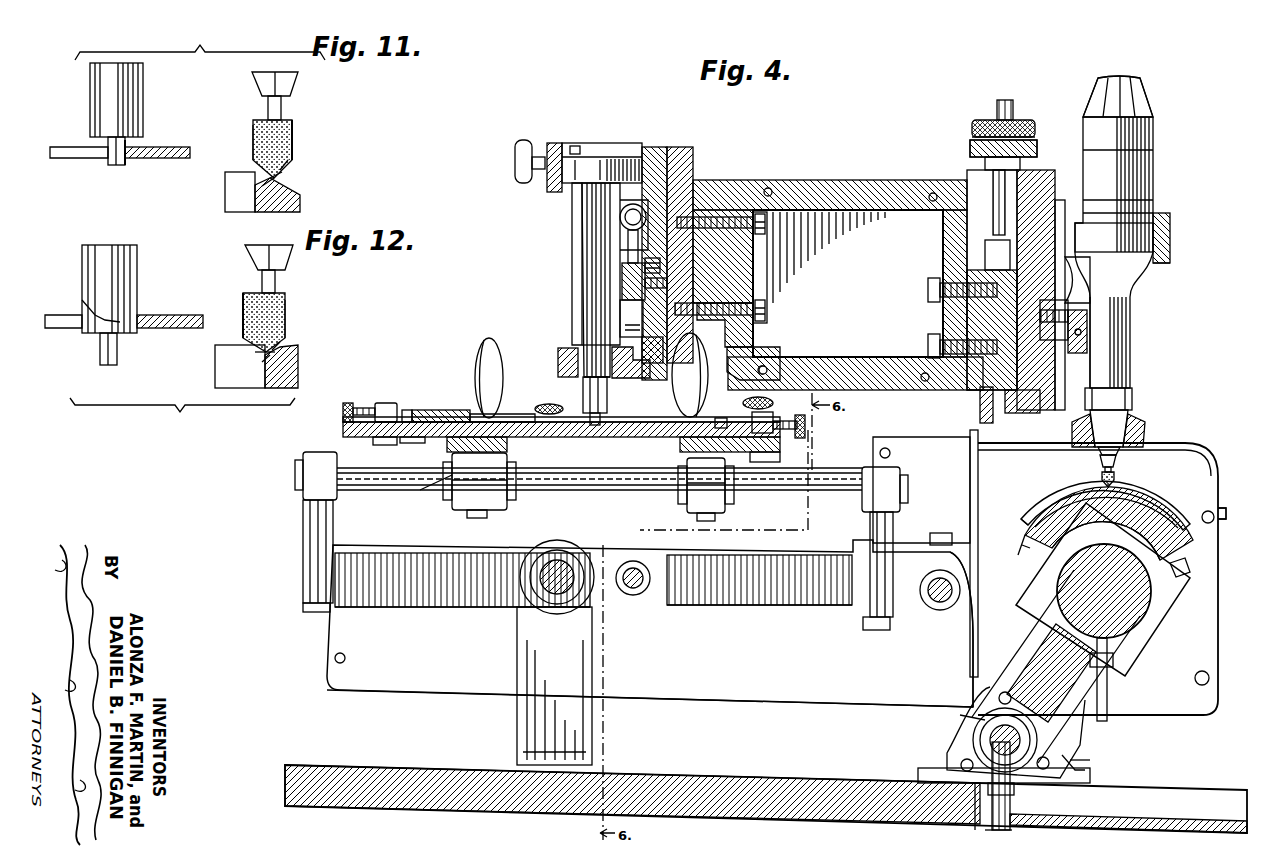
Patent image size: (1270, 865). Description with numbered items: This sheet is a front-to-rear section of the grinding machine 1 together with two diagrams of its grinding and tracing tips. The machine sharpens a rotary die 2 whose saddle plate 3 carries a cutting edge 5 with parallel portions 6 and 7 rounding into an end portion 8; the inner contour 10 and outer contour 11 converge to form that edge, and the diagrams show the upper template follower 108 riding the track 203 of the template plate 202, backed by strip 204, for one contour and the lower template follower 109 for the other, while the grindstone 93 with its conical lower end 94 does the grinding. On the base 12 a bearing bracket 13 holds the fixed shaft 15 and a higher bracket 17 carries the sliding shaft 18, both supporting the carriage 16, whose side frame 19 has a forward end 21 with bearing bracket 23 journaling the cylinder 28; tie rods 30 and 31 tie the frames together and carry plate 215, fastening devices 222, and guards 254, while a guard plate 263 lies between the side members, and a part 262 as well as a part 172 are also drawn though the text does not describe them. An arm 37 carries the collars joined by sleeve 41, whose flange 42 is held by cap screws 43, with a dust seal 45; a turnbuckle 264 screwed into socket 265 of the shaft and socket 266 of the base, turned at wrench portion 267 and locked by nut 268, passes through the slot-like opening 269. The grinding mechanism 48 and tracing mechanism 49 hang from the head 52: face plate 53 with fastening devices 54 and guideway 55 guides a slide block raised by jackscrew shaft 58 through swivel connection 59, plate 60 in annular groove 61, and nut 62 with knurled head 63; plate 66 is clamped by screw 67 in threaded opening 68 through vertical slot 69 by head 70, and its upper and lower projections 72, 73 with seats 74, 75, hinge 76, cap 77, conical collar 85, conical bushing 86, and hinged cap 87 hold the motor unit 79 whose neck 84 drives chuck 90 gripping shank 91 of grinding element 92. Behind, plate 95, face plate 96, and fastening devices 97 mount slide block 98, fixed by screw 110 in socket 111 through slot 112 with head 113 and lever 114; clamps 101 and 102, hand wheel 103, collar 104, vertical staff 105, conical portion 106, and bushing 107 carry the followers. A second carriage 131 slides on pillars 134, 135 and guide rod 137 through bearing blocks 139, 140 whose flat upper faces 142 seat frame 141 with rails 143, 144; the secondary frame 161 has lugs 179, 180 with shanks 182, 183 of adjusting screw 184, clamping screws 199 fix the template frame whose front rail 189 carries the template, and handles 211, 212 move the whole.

In FIG. 4, the grinding machine 1 is at (320, 452).
In FIG. 4, the rotary die 2 is at (1170, 550).
In FIG. 11, the saddle plate 3 is at (300, 200).
In FIG. 12, the saddle plate 3 is at (298, 375).
In FIG. 4, the saddle plate 3 is at (1165, 567).
In FIG. 11, the cutting edge 5 is at (235, 172).
In FIG. 12, the cutting edge 5 is at (225, 345).
In FIG. 4, the cutting edge 5 is at (1165, 503).
In FIG. 4, the parallel cutting edge portion 6 is at (1022, 545).
In FIG. 11, the parallel cutting edge portion 7 is at (278, 182).
In FIG. 12, the parallel cutting edge portion 7 is at (272, 356).
In FIG. 4, the parallel cutting edge portion 7 is at (1218, 522).
In FIG. 4, the end cutting edge portion 8 is at (1150, 503).
In FIG. 11, the inner contour 10 is at (253, 135).
In FIG. 12, the inner contour 10 is at (285, 320).
In FIG. 4, the inner contour 10 is at (1045, 500).
In FIG. 11, the outer contour 11 is at (290, 160).
In FIG. 12, the outer contour 11 is at (282, 344).
In FIG. 4, the outer contour 11 is at (1020, 538).
In FIG. 4, the base 12 is at (290, 765).
In FIG. 4, the bearing bracket 13 is at (1075, 768).
In FIG. 4, the fixed shaft 15 is at (1020, 730).
In FIG. 4, the carriage 16 is at (303, 540).
In FIG. 4, the bracket 17 is at (517, 640).
In FIG. 4, the shaft 18 is at (560, 565).
In FIG. 4, the side frame 19 is at (757, 612).
In FIG. 4, the forward end 21 is at (973, 645).
In FIG. 4, the bearing bracket 23 is at (1150, 615).
In FIG. 4, the cylinder 28 is at (1140, 605).
In FIG. 4, the tie rod 30 is at (938, 605).
In FIG. 4, the tie rod 31 is at (635, 590).
In FIG. 4, the arm 37 is at (1107, 690).
In FIG. 4, the sleeve 41 is at (985, 700).
In FIG. 4, the flange 42 is at (1045, 738).
In FIG. 4, the cap screw 43 is at (945, 772).
In FIG. 4, the dust seal 45 is at (975, 730).
In FIG. 4, the grinding mechanism 48 is at (1130, 330).
In FIG. 4, the tracing mechanism 49 is at (572, 293).
In FIG. 4, the head 52 is at (870, 180).
In FIG. 4, the face plate 53 is at (980, 400).
In FIG. 4, the fastening device 54 is at (930, 330).
In FIG. 4, the vertical guideway 55 is at (993, 205).
In FIG. 4, the jackscrew shaft 58 is at (1010, 100).
In FIG. 4, the swivel connection 59 is at (990, 240).
In FIG. 4, the plate 60 is at (1040, 170).
In FIG. 4, the annular groove 61 is at (985, 162).
In FIG. 4, the nut 62 is at (1030, 120).
In FIG. 4, the knurled head 63 is at (975, 122).
In FIG. 4, the plate 66 is at (1118, 204).
In FIG. 4, the screw 67 is at (1085, 280).
In FIG. 4, the internally threaded opening 68 is at (1050, 340).
In FIG. 4, the vertical slot 69 is at (1114, 237).
In FIG. 4, the head 70 is at (1085, 312).
In FIG. 4, the upper lateral projection 72 is at (1070, 215).
In FIG. 4, the lower lateral projection 73 is at (1100, 452).
In FIG. 4, the semicircular seat 74 is at (1118, 189).
In FIG. 4, the semicircular seat 75 is at (1108, 399).
In FIG. 4, the hinge 76 is at (1170, 220).
In FIG. 4, the cap 77 is at (1170, 245).
In FIG. 4, the motor unit 79 is at (1150, 110).
In FIG. 4, the depending neck portion 84 is at (1130, 310).
In FIG. 4, the conical collar 85 is at (1128, 415).
In FIG. 4, the conical bushing 86 is at (1125, 428).
In FIG. 4, the hinged cap 87 is at (1145, 435).
In FIG. 11, the chuck 90 is at (296, 80).
In FIG. 12, the chuck 90 is at (255, 245).
In FIG. 4, the chuck 90 is at (1116, 460).
In FIG. 11, the shank 91 is at (281, 108).
In FIG. 12, the shank 91 is at (262, 278).
In FIG. 4, the shank 91 is at (1105, 469).
In FIG. 11, the grinding element 92 is at (253, 122).
In FIG. 12, the grinding element 92 is at (285, 295).
In FIG. 11, the grindstone 93 is at (294, 125).
In FIG. 12, the grindstone 93 is at (243, 295).
In FIG. 4, the grindstone 93 is at (1114, 475).
In FIG. 11, the conical lower end 94 is at (282, 172).
In FIG. 12, the conical lower end 94 is at (255, 352).
In FIG. 4, the conical lower end 94 is at (1100, 484).
In FIG. 4, the plate 95 is at (730, 180).
In FIG. 4, the face plate 96 is at (685, 147).
In FIG. 4, the fastening device 97 is at (745, 217).
In FIG. 4, the slide block 98 is at (655, 147).
In FIG. 4, the upper clamp 101 is at (555, 143).
In FIG. 4, the lower clamp 102 is at (558, 358).
In FIG. 4, the hand wheel 103 is at (515, 162).
In FIG. 4, the collar 104 is at (600, 146).
In FIG. 11, the vertical staff 105 is at (130, 60).
In FIG. 12, the vertical staff 105 is at (122, 245).
In FIG. 4, the vertical staff 105 is at (582, 228).
In FIG. 4, the conical portion 106 is at (590, 355).
In FIG. 4, the bushing 107 is at (588, 372).
In FIG. 11, the upper template follower 108 is at (158, 92).
In FIG. 12, the upper template follower 108 is at (137, 280).
In FIG. 4, the upper template follower 108 is at (620, 393).
In FIG. 11, the lower template follower 109 is at (110, 160).
In FIG. 12, the lower template follower 109 is at (117, 352).
In FIG. 4, the lower template follower 109 is at (600, 420).
In FIG. 4, the screw 110 is at (622, 280).
In FIG. 4, the internally threaded socket 111 is at (645, 290).
In FIG. 4, the slot 112 is at (628, 247).
In FIG. 4, the head 113 is at (645, 265).
In FIG. 4, the operating lever 114 is at (620, 213).
In FIG. 4, the second carriage 131 is at (375, 445).
In FIG. 4, the pillar 134 is at (862, 500).
In FIG. 4, the pillar 135 is at (300, 490).
In FIG. 4, the guide rod 137 is at (620, 490).
In FIG. 4, the bearing block 139 is at (472, 495).
In FIG. 4, the bearing block 140 is at (730, 518).
In FIG. 4, the frame 141 is at (447, 450).
In FIG. 4, the flat upper face 142 is at (599, 466).
In FIG. 4, the front transverse rail 143 is at (725, 500).
In FIG. 4, the rear transverse rail 144 is at (428, 490).
In FIG. 4, the secondary frame 161 is at (780, 448).
In FIG. 4, the knob 172 is at (549, 404).
In FIG. 4, the lug 179 is at (760, 397).
In FIG. 4, the lug 180 is at (385, 403).
In FIG. 4, the threaded shank 182 is at (797, 425).
In FIG. 4, the threaded shank 183 is at (420, 410).
In FIG. 4, the knurled headed adjusting screw 184 is at (805, 430).
In FIG. 4, the front rail 189 is at (440, 410).
In FIG. 4, the knurled headed clamping screw 199 is at (790, 340).
In FIG. 11, the template plate 202 is at (180, 147).
In FIG. 12, the template plate 202 is at (178, 315).
In FIG. 4, the template plate 202 is at (455, 420).
In FIG. 11, the track 203 is at (127, 158).
In FIG. 12, the track 203 is at (82, 305).
In FIG. 4, the track 203 is at (502, 409).
In FIG. 4, the strip 204 is at (401, 451).
In FIG. 4, the handle 211 is at (483, 340).
In FIG. 4, the handle 212 is at (767, 300).
In FIG. 4, the plate 215 is at (752, 700).
In FIG. 4, the fastening device 222 is at (345, 658).
In FIG. 4, the guard 254 is at (920, 437).
In FIG. 4, the nut 262 is at (1113, 660).
In FIG. 4, the guard plate 263 is at (970, 470).
In FIG. 4, the turnbuckle 264 is at (1010, 795).
In FIG. 4, the socket 265 is at (955, 713).
In FIG. 4, the socket 266 is at (1005, 830).
In FIG. 4, the wrench portion 267 is at (1014, 788).
In FIG. 4, the nut 268 is at (985, 815).
In FIG. 4, the slot-like opening 269 is at (1081, 755).